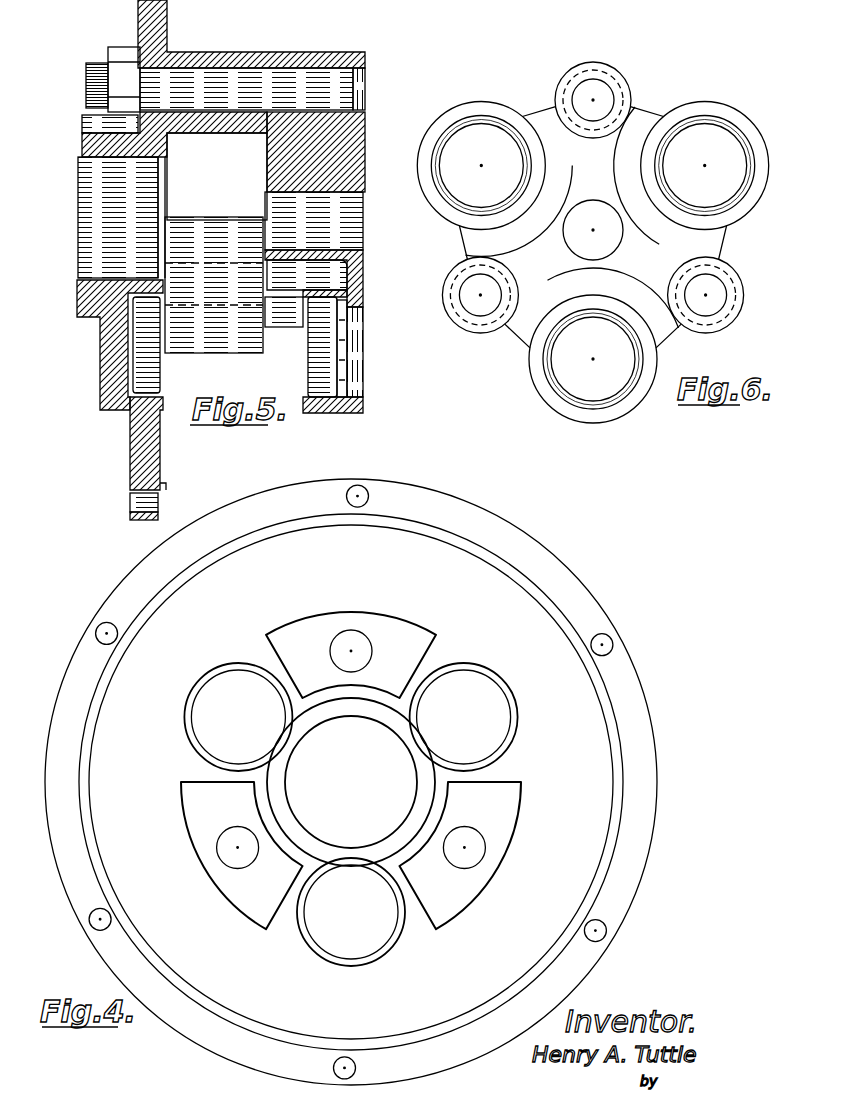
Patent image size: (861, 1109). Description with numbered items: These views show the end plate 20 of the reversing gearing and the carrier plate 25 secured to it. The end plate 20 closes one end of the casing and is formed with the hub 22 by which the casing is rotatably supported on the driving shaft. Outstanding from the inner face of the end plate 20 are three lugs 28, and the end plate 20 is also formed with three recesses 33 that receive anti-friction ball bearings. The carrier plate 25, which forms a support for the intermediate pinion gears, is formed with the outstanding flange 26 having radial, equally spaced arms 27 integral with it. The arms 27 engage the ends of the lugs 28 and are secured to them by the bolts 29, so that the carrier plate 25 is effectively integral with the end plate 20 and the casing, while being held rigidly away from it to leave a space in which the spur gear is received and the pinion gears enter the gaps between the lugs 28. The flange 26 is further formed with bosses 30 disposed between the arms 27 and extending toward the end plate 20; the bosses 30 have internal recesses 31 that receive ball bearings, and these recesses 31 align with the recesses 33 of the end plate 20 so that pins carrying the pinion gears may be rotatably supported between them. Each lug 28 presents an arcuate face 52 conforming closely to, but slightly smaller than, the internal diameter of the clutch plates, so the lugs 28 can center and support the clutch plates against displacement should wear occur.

In FIG. 5, the end plate 20 is at (133, 453).
In FIG. 4, the end plate 20 is at (640, 868).
In FIG. 5, the hub 22 is at (90, 302).
In FIG. 5, the carrier plate 25 is at (365, 160).
In FIG. 6, the carrier plate 25 is at (442, 273).
In FIG. 6, the outstanding flange 26 is at (708, 243).
In FIG. 6, the radial arms 27 is at (613, 148).
In FIG. 5, the lugs 28 is at (213, 55).
In FIG. 4, the lugs 28 is at (330, 620).
In FIG. 5, the bolts 29 is at (285, 83).
In FIG. 5, the bosses 30 is at (333, 413).
In FIG. 6, the bosses 30 is at (478, 102).
In FIG. 5, the internal recesses 31 is at (313, 393).
In FIG. 6, the internal recesses 31 is at (448, 128).
In FIG. 5, the recesses 33 is at (157, 387).
In FIG. 4, the recesses 33 is at (213, 667).
In FIG. 4, the arcuate faces 52 is at (228, 907).